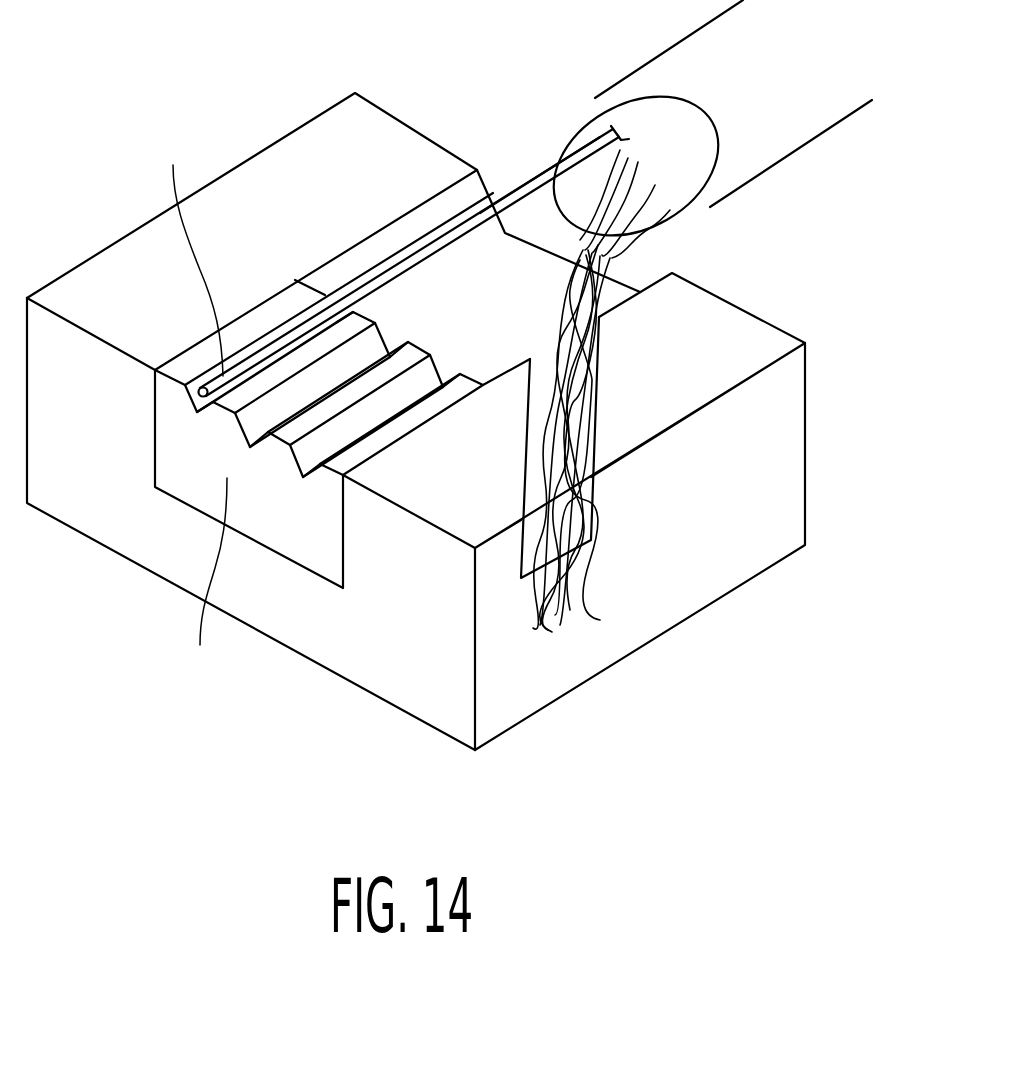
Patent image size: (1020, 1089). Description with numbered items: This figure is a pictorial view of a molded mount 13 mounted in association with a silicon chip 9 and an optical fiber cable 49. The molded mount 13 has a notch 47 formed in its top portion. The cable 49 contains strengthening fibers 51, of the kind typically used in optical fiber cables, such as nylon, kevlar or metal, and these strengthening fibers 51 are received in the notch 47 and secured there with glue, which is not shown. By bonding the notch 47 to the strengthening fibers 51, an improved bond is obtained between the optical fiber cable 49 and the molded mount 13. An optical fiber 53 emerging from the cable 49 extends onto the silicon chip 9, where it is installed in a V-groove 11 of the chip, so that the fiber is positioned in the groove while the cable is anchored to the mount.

The silicon chip 9 is at (309, 534).
The V-groove 11 is at (327, 300).
The molded mount 13 is at (758, 463).
The notch 47 is at (597, 527).
The optical fiber cable 49 is at (787, 137).
The strengthening fibers 51 is at (567, 617).
The optical fiber 53 is at (521, 184).